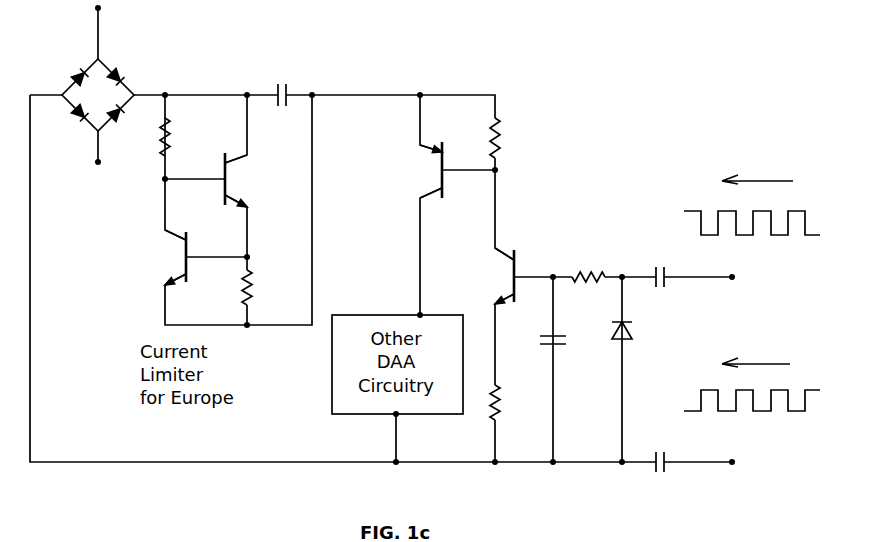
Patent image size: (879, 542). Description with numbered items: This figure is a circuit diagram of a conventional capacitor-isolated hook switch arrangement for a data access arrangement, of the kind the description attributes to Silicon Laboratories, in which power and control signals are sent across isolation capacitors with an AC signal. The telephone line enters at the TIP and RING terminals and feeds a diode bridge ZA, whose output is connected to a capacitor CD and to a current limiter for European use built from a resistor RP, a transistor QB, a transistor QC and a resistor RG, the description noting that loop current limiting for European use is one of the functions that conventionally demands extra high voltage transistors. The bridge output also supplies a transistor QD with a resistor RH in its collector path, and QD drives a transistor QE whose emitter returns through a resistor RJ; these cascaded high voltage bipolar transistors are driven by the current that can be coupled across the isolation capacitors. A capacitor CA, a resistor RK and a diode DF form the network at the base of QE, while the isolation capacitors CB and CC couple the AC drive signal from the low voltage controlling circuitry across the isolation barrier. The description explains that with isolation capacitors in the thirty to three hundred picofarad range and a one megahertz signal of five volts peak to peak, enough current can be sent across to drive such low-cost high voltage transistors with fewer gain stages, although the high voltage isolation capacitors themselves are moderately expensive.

The diode bridge ZA is at (98, 88).
The tip terminal TIP is at (115, 33).
The ring terminal RING is at (69, 146).
The resistor RP 1K RP is at (182, 153).
The capacitor CD 10UF CD is at (279, 96).
The transistor QB is at (219, 181).
The transistor QC is at (193, 257).
The resistor RG 10 ohm RG is at (261, 300).
The transistor QD is at (449, 169).
The resistor RH 100K RH is at (522, 138).
The transistor QE is at (521, 276).
The resistor RJ 1K RJ is at (508, 407).
The capacitor CA 30PF CA is at (563, 336).
The resistor RK 1K RK is at (588, 253).
The diode DF is at (636, 328).
The capacitor CB 30PF CB is at (669, 271).
The capacitor CC 30PF CC is at (669, 457).